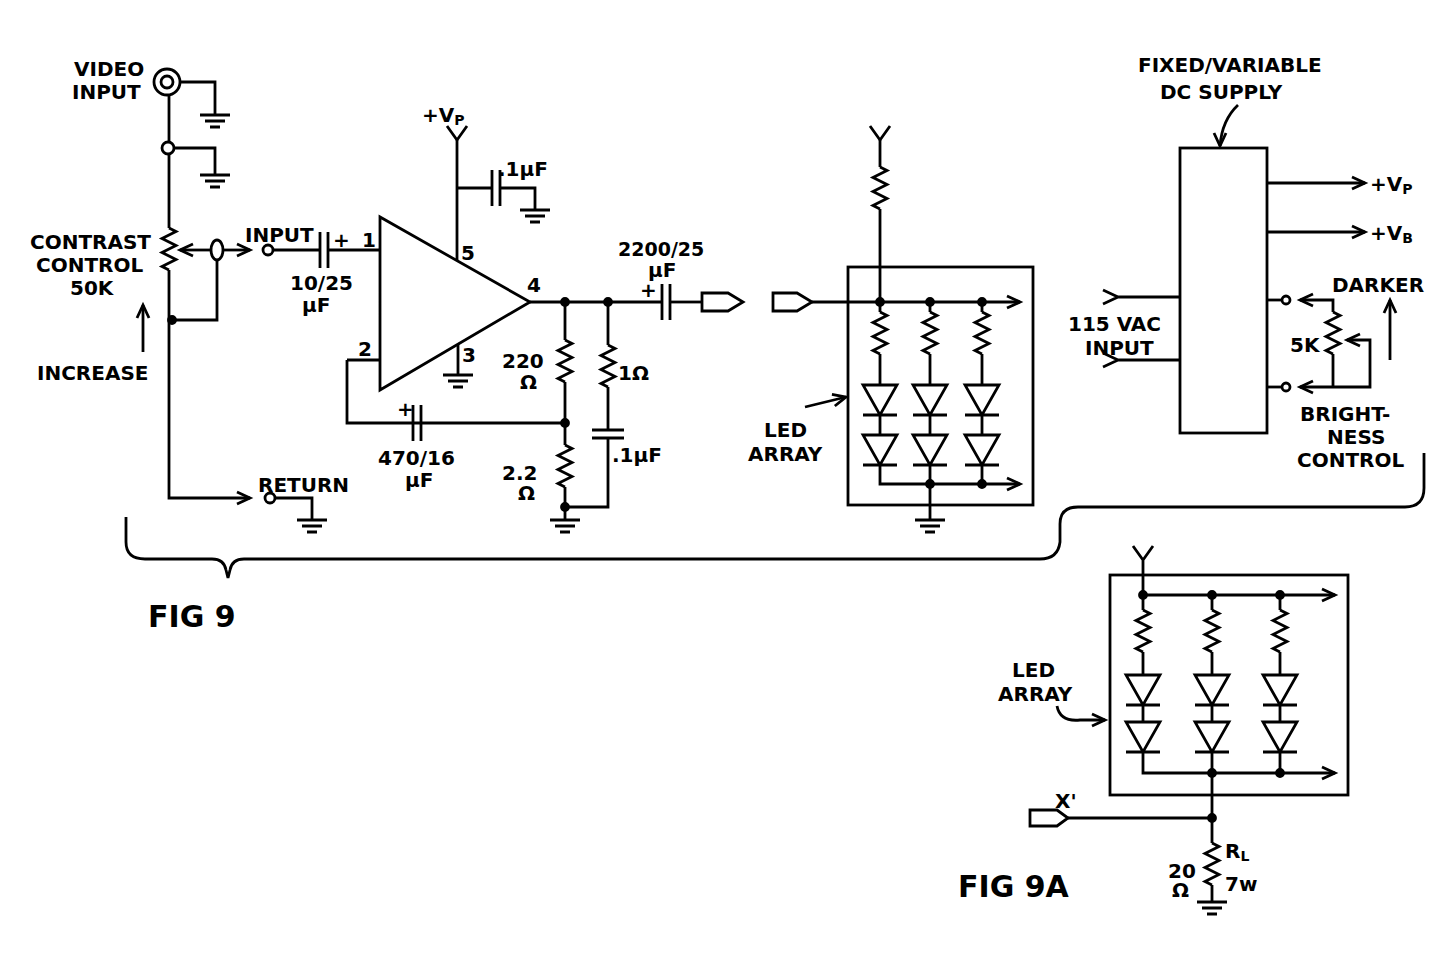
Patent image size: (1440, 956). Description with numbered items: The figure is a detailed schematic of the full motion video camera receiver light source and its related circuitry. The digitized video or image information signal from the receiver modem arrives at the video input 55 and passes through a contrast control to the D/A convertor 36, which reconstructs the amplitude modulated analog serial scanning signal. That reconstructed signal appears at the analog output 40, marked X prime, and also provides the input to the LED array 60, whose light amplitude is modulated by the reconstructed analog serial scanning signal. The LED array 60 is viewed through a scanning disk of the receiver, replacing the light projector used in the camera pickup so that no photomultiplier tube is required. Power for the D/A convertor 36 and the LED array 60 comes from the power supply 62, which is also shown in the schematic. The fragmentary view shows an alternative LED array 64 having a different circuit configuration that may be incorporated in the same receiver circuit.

In FIG. 9, the video input 55 is at (178, 72).
In FIG. 9, the D/A convertor 36 is at (423, 208).
In FIG. 9, the analog video output 40 is at (712, 312).
In FIG. 9, the LED array 60 is at (993, 266).
In FIG. 9, the power supply 62 is at (1172, 186).
In FIG. 9A, the alternative LED array 64 is at (1110, 590).